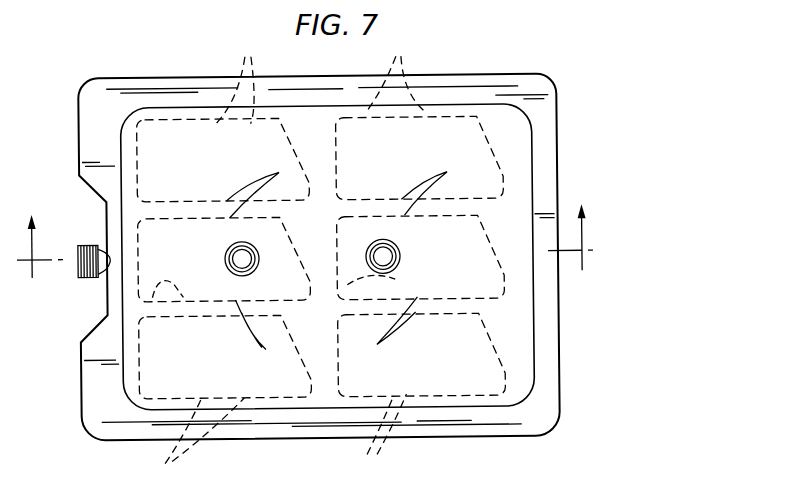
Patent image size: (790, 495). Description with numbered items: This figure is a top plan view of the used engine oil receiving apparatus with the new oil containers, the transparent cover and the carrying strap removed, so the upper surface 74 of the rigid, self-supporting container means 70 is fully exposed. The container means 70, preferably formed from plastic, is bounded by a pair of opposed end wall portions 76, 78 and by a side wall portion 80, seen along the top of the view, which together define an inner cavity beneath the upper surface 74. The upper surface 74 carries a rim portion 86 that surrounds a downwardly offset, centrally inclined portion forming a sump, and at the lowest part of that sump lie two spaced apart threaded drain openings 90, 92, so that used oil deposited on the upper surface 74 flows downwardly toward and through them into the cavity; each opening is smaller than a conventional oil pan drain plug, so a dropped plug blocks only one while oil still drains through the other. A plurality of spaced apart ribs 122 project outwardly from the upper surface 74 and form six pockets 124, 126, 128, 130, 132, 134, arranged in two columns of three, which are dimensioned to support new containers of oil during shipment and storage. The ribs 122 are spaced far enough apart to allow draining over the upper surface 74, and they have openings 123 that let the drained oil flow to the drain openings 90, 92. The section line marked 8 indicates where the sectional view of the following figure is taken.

The container means 70 is at (594, 257).
The upper surface 74 is at (483, 253).
The end wall portion 76 is at (78, 118).
The end wall portion 78 is at (560, 147).
The side wall portion 80 is at (216, 78).
The rim portion 86 is at (452, 85).
The drain opening 90 is at (228, 250).
The drain opening 92 is at (400, 250).
The ribs 122 is at (396, 282).
The openings 123 is at (356, 260).
The pocket 124 is at (243, 177).
The pocket 126 is at (233, 298).
The pocket 128 is at (228, 374).
The pocket 130 is at (440, 169).
The pocket 132 is at (457, 277).
The pocket 134 is at (437, 359).
The section line 8- 8 is at (316, 232).